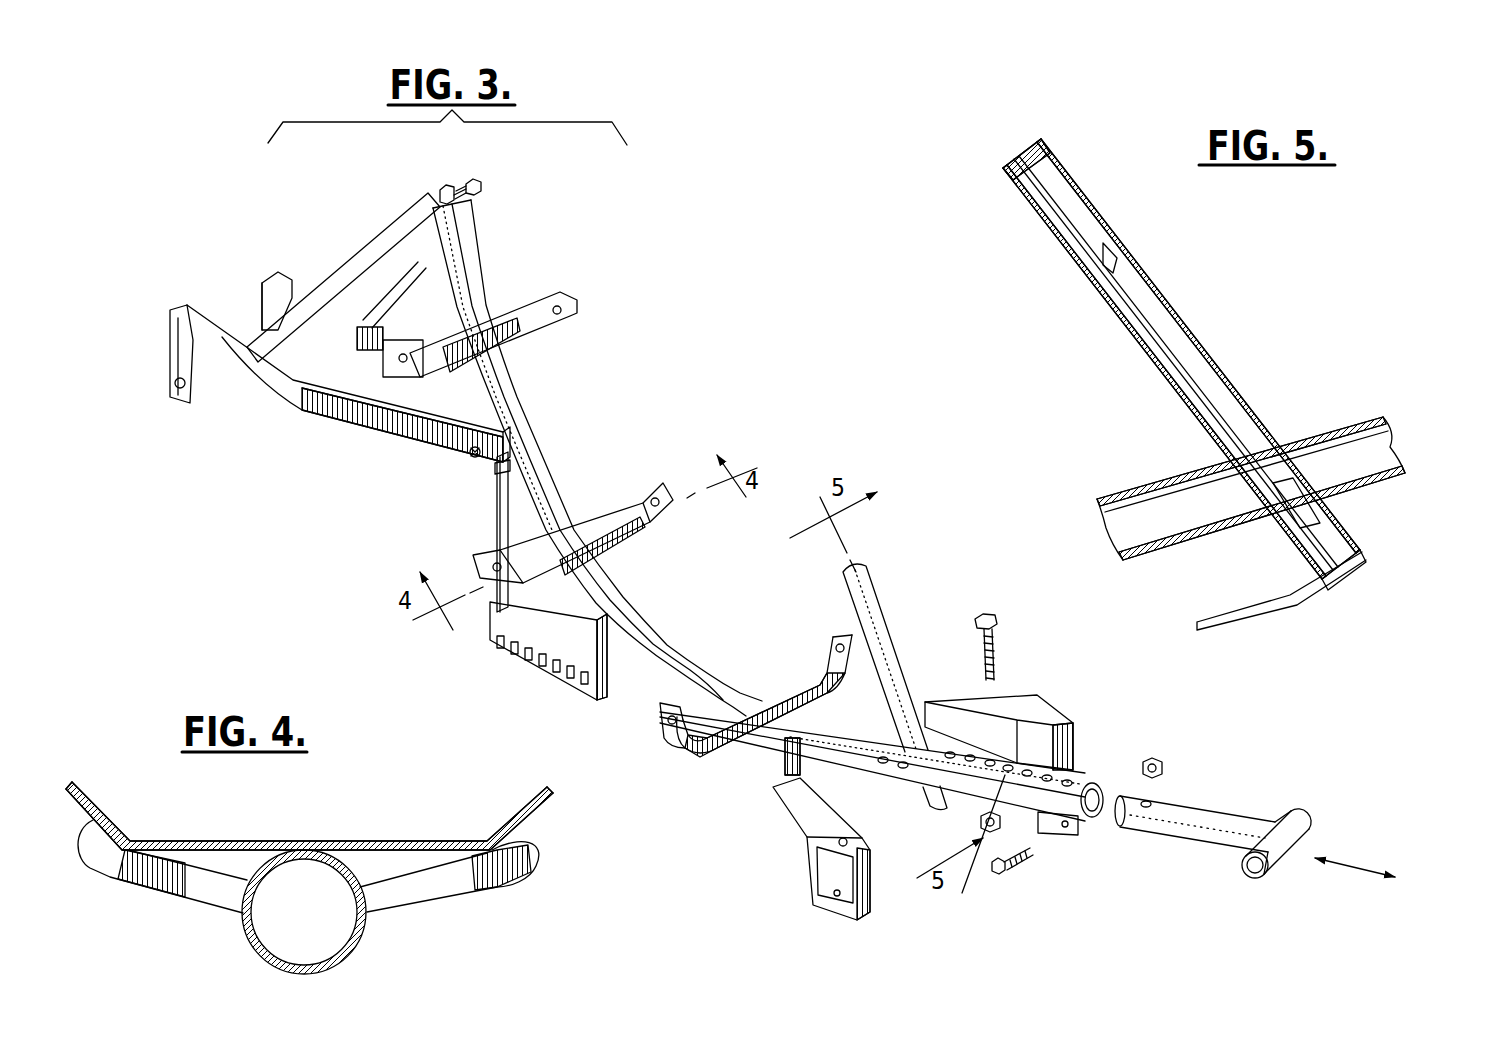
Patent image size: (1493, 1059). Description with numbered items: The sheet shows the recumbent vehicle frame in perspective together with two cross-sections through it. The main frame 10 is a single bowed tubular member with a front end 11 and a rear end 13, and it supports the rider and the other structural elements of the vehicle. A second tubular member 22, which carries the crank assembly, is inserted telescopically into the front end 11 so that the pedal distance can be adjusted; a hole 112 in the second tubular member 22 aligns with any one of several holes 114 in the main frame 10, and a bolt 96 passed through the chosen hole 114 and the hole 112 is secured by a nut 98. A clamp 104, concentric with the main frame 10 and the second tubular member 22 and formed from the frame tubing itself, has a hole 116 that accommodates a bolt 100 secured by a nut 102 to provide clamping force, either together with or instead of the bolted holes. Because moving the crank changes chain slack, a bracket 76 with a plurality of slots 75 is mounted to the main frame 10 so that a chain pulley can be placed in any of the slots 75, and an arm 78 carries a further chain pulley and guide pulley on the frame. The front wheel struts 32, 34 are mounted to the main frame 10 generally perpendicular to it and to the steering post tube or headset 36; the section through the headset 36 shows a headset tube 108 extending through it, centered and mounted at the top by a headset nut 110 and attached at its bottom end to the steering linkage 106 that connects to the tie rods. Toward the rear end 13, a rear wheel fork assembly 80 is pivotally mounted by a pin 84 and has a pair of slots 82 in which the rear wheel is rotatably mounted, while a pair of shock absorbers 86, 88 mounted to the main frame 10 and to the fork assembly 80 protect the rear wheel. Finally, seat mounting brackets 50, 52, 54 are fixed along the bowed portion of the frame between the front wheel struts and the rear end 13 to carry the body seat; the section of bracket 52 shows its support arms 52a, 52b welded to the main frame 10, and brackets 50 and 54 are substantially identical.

In FIG. 3, the main frame 10 is at (668, 644).
In FIG. 4, the main frame 10 is at (367, 925).
In FIG. 5, the main frame 10 is at (1337, 430).
In FIG. 3, the front end 11 is at (1113, 793).
In FIG. 3, the rear end 13 is at (426, 190).
In FIG. 3, the second tubular member 22 is at (1262, 822).
In FIG. 3, the front wheel strut 32 is at (1055, 718).
In FIG. 3, the front wheel strut 34 is at (827, 783).
In FIG. 3, the steering post tube or headset 36 is at (873, 584).
In FIG. 5, the steering post tube or headset 36 is at (1195, 340).
In FIG. 3, the seat mounting bracket 50 is at (832, 650).
In FIG. 3, the seat mounting bracket 52 is at (658, 478).
In FIG. 4, the seat mounting bracket 52 is at (397, 842).
In FIG. 4, the support arm 52a is at (213, 890).
In FIG. 4, the support arm 52b is at (495, 887).
In FIG. 3, the seat mounting bracket 54 is at (578, 305).
In FIG. 3, the slots 75 is at (567, 667).
In FIG. 3, the bracket 76 is at (497, 621).
In FIG. 3, the arm 78 is at (750, 780).
In FIG. 3, the rear wheel fork assembly 80 is at (283, 397).
In FIG. 3, the slots 82 is at (267, 281).
In FIG. 3, the pin 84 is at (465, 459).
In FIG. 3, the shock absorber 86 is at (368, 252).
In FIG. 3, the shock absorber 88 is at (462, 217).
In FIG. 3, the bolt 96 is at (997, 612).
In FIG. 3, the nut 98 is at (1003, 827).
In FIG. 3, the bolt 100 is at (1017, 870).
In FIG. 3, the nut 102 is at (1170, 765).
In FIG. 3, the clamp 104 is at (1087, 830).
In FIG. 5, the steering linkage 106 is at (1270, 610).
In FIG. 5, the headset tube 108 is at (1102, 251).
In FIG. 5, the headset nut 110 is at (1043, 142).
In FIG. 3, the hole 112 is at (1150, 801).
In FIG. 3, the holes 114 is at (1000, 774).
In FIG. 3, the hole 116 is at (1070, 833).